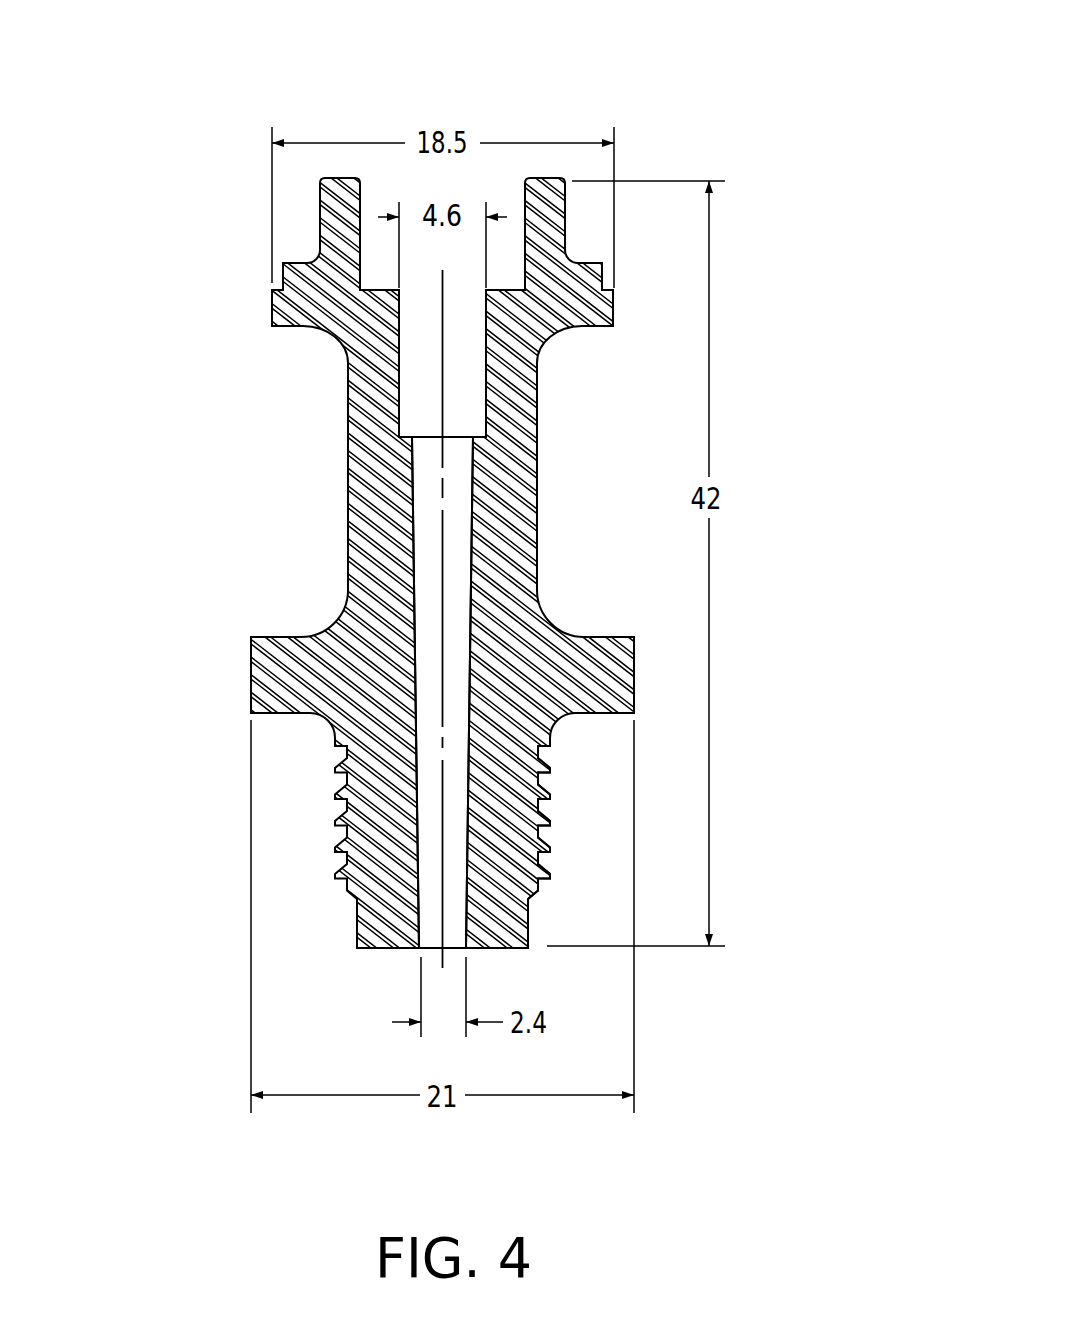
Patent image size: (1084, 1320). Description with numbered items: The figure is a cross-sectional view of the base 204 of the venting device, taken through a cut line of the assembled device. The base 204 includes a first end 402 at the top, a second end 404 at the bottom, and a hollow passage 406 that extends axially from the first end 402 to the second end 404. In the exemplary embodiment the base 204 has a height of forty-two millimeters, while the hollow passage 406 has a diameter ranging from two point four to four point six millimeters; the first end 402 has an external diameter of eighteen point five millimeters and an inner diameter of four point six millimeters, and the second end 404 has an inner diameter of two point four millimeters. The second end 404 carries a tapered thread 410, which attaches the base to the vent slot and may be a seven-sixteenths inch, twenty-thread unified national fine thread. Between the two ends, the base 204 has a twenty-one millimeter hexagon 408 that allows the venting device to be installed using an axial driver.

The base 204 is at (830, 150).
The first end 402 is at (273, 305).
The second end 404 is at (357, 935).
The hollow passage 406 is at (443, 742).
The hexagon 408 is at (635, 670).
The tapered thread 410 is at (547, 815).